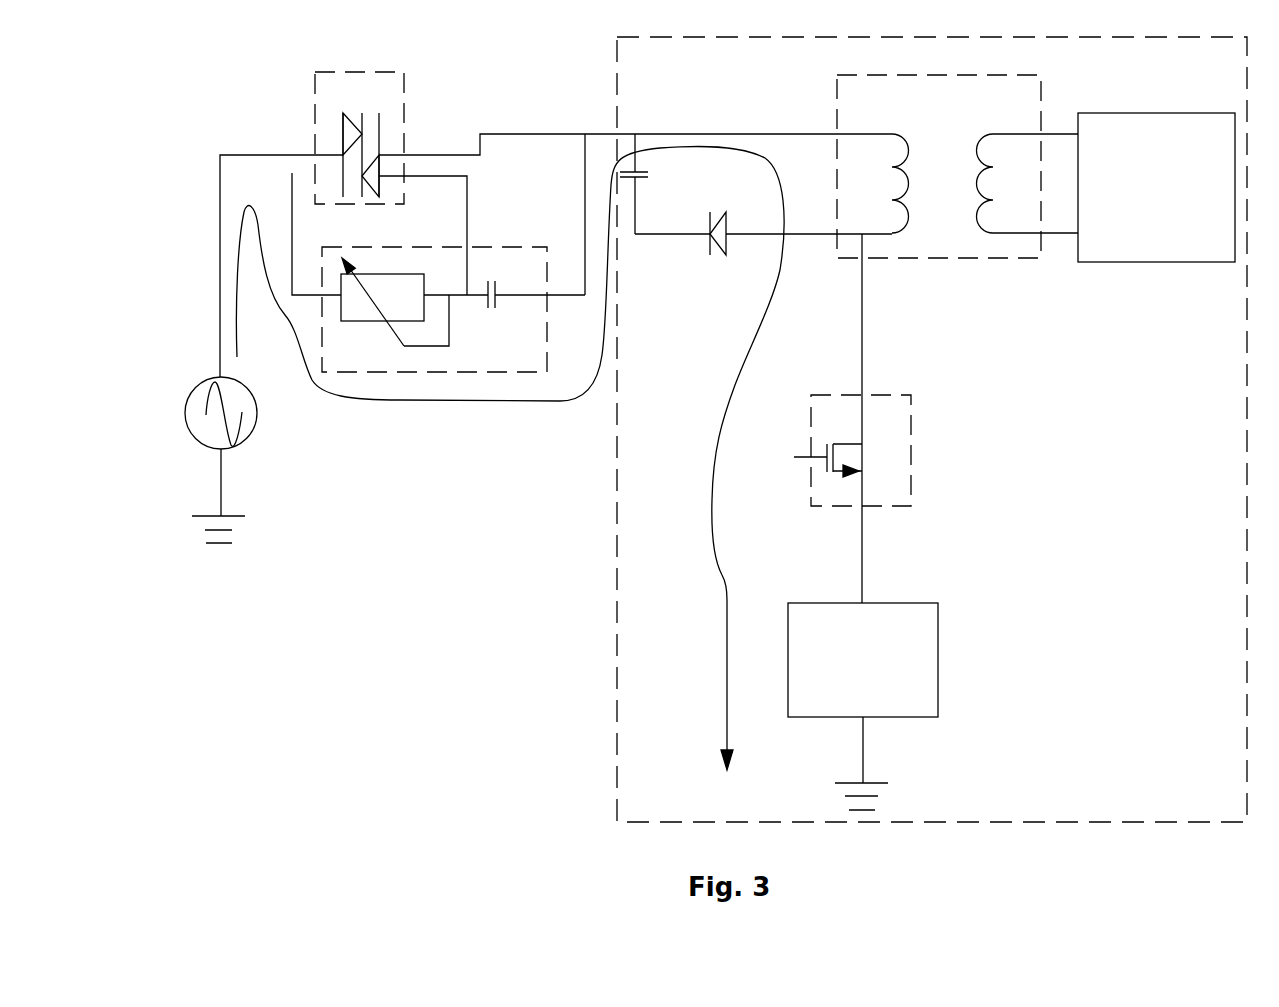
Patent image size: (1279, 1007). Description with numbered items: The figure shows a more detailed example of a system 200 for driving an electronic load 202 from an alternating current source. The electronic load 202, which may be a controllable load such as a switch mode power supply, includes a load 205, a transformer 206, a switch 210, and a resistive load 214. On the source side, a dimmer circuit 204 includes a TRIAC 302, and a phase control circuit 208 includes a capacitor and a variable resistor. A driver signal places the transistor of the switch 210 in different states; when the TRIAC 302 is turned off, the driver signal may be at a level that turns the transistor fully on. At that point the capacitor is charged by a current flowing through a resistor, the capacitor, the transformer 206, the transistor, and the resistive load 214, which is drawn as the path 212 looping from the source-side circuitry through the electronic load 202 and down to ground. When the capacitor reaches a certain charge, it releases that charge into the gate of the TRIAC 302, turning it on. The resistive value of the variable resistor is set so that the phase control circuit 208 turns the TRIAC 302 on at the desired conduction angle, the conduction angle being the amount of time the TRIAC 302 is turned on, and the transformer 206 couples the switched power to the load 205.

The system 200 is at (176, 96).
The electronic load 202 is at (932, 429).
The dimmer circuit 204 is at (366, 73).
The load 205 is at (1156, 113).
The transformer 206 is at (944, 76).
The phase control circuit 208 is at (436, 246).
The switch 210 is at (848, 395).
The path 212 is at (720, 558).
The resistive load 214 is at (824, 603).
The TRIAC 302 is at (368, 114).